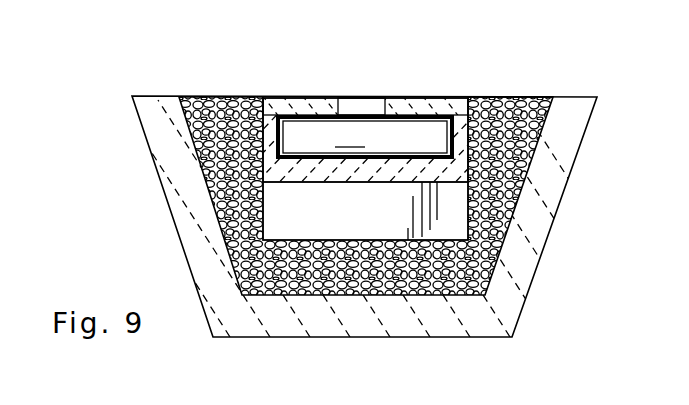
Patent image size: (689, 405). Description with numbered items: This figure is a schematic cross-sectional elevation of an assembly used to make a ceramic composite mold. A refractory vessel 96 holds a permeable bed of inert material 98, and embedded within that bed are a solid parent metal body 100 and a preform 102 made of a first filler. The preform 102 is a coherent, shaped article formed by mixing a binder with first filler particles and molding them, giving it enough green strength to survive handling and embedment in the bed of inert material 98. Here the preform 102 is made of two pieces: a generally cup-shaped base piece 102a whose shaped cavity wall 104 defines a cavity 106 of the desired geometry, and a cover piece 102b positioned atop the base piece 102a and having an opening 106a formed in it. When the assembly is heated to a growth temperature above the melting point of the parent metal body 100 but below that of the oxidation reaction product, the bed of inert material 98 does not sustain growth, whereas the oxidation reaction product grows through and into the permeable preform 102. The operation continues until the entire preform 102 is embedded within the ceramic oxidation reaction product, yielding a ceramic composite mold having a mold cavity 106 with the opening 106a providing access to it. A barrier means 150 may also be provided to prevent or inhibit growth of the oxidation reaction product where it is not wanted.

The refractory vessel 96 is at (534, 228).
The bed of inert material 98 is at (370, 282).
The parent metal body 100 is at (280, 221).
The preform 102 is at (260, 139).
The base piece 102a is at (480, 98).
The cover piece 102b is at (438, 99).
The shaped cavity wall 104 is at (286, 128).
The cavity 106 is at (365, 137).
The opening 106a is at (356, 98).
The barrier means 150 is at (305, 157).